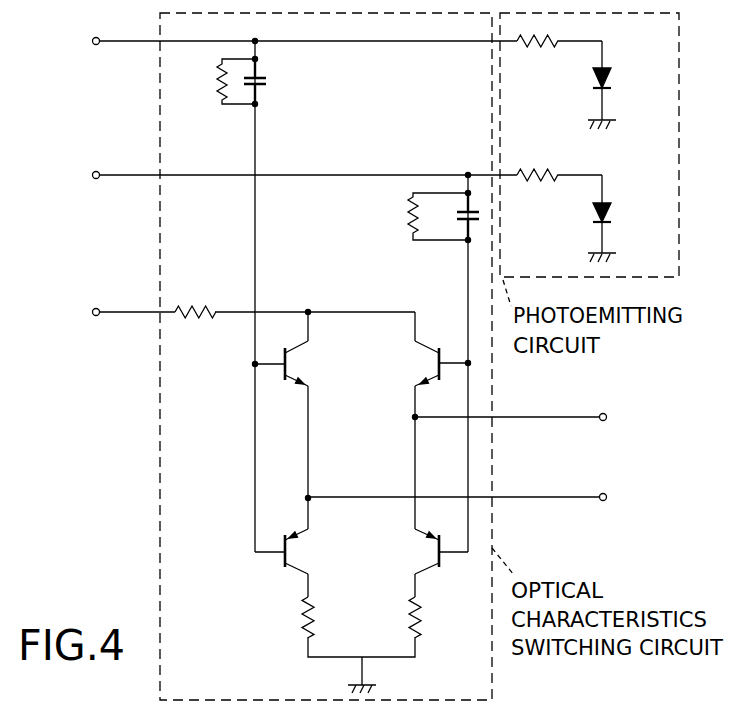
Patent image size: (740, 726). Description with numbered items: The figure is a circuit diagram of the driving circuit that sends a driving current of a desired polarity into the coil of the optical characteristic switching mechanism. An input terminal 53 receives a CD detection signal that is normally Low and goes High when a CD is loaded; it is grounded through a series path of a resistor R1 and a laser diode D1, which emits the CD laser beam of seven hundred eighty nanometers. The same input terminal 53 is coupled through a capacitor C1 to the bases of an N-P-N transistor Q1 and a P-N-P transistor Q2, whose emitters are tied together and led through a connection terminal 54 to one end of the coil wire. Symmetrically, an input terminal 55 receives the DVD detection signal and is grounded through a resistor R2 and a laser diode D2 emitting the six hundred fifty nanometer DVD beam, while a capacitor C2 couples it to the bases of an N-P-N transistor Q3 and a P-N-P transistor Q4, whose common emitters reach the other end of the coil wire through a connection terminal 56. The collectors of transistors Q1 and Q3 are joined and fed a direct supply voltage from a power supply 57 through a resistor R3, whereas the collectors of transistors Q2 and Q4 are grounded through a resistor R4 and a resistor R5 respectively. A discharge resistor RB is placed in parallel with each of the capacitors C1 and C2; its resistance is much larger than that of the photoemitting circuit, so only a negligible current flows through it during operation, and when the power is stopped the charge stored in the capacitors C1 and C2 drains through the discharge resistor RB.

The input terminal 53 is at (92, 41).
The input terminal 55 is at (92, 176).
The power supply 57 is at (92, 312).
The connection terminal 56 is at (607, 418).
The connection terminal 54 is at (607, 497).
The discharge resistor RB is at (411, 217).
The capacitor C1 is at (268, 81).
The capacitor C2 is at (481, 215).
The resistor R1 is at (532, 52).
The resistor R2 is at (533, 167).
The resistor R3 is at (195, 305).
The resistor R4 is at (305, 614).
The resistor R5 is at (420, 620).
The laser diode D1 is at (612, 82).
The laser diode D2 is at (612, 212).
The N-P-N transistor Q1 is at (298, 365).
The P-N-P transistor Q2 is at (298, 553).
The N-P-N transistor Q3 is at (431, 367).
The P-N-P transistor Q4 is at (434, 552).